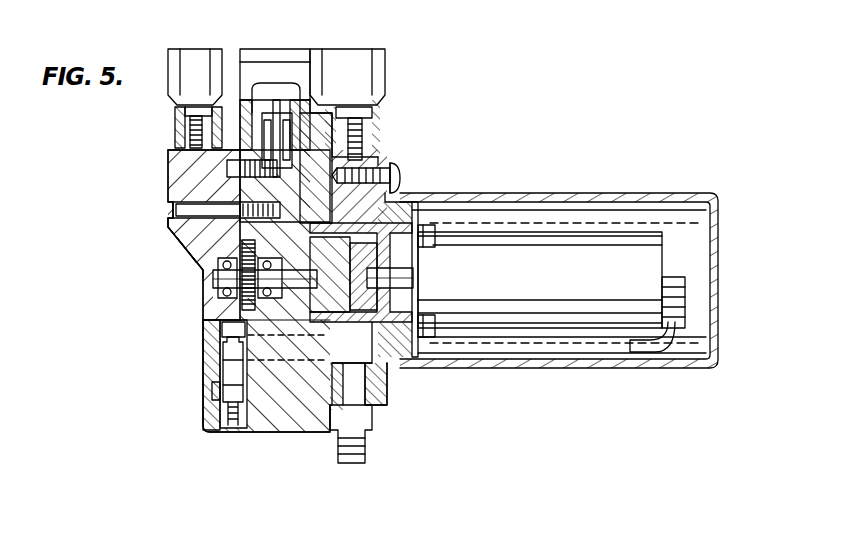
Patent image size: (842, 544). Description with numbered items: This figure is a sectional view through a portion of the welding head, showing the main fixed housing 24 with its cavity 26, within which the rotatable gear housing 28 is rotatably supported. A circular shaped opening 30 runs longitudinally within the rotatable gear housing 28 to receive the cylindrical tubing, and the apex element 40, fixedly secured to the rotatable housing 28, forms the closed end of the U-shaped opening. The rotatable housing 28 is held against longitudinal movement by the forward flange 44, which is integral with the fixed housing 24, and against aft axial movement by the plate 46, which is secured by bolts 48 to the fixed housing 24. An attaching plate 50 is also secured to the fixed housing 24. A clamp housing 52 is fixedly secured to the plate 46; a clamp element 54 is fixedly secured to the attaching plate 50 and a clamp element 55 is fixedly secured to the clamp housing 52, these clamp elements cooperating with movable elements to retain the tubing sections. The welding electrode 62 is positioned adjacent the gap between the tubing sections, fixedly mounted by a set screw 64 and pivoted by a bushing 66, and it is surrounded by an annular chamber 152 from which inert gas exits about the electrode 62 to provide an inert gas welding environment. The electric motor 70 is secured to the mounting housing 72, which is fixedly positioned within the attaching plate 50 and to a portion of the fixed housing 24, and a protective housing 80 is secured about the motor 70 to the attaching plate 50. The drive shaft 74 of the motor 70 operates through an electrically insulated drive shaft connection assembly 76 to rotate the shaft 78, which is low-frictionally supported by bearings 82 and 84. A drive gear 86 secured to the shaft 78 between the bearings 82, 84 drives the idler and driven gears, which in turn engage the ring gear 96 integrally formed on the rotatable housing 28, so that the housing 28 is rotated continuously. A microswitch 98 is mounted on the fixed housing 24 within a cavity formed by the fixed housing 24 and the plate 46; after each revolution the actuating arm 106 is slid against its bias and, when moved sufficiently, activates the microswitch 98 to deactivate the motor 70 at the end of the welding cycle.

The main fixed housing 24 is at (288, 432).
The cavity 26 is at (222, 266).
The rotatable gear housing 28 is at (180, 146).
The circular shaped opening 30 is at (175, 166).
The apex element 40 is at (295, 68).
The forward flange 44 is at (330, 135).
The plate 46 is at (172, 183).
The bolts 48 is at (170, 228).
The attaching plate 50 is at (398, 182).
The clamp housing 52 is at (183, 128).
The clamp element 54 is at (377, 78).
The clamp element 55 is at (183, 45).
The electrode 62 is at (245, 115).
The set screw 64 is at (172, 202).
The bushing 66 is at (365, 140).
The electric motor 70 is at (602, 315).
The mounting housing 72 is at (405, 333).
The drive shaft 74 is at (395, 277).
The drive shaft connection assembly 76 is at (385, 360).
The shaft 78 is at (215, 282).
The protective housing 80 is at (718, 255).
The bearing 82 is at (268, 330).
The bearing 84 is at (240, 300).
The drive gear 86 is at (262, 300).
The ring gear 96 is at (190, 242).
The microswitch 98 is at (227, 372).
The actuating arm 106 is at (218, 345).
The annular chamber 152 is at (268, 110).